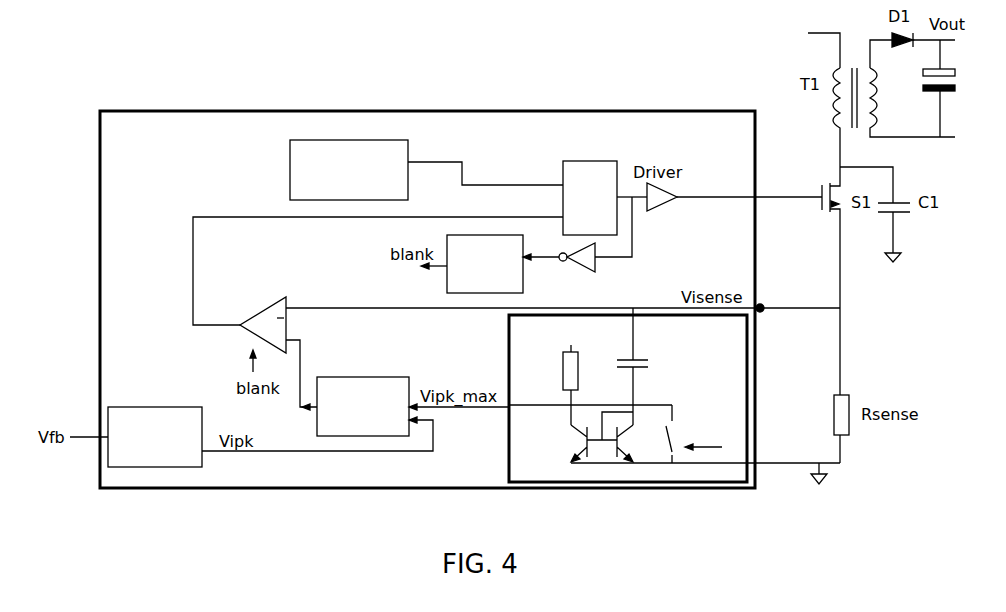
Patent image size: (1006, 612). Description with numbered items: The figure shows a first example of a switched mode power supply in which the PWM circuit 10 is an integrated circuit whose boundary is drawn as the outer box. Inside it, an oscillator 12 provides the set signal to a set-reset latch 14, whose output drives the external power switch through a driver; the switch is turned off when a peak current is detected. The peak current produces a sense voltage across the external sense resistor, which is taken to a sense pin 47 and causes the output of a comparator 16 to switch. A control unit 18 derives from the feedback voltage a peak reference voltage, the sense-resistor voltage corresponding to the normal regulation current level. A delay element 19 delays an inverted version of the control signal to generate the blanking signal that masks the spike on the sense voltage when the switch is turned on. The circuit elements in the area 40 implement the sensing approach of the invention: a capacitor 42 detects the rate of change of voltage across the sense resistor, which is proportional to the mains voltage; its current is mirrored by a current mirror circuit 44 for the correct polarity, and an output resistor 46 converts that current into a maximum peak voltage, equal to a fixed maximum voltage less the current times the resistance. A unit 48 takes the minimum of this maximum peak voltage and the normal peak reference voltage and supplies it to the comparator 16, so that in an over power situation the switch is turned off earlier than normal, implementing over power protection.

The PWM circuit 10 is at (334, 110).
The oscillator 12 is at (290, 183).
The set-reset latch 14 is at (563, 175).
The comparator 16 is at (292, 318).
The control unit 18 is at (167, 407).
The delay element 19 is at (447, 283).
The area 40 is at (752, 398).
The capacitor 42 is at (645, 357).
The current mirror circuit 44 is at (559, 461).
The output resistor 46 is at (581, 375).
The sense pin 47 is at (762, 304).
The unit 48 is at (392, 377).